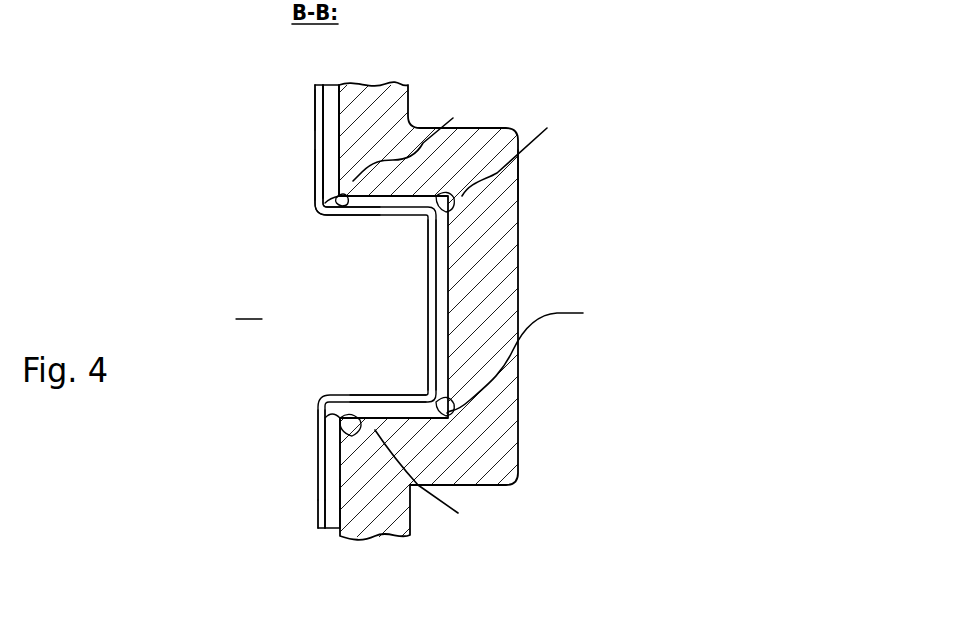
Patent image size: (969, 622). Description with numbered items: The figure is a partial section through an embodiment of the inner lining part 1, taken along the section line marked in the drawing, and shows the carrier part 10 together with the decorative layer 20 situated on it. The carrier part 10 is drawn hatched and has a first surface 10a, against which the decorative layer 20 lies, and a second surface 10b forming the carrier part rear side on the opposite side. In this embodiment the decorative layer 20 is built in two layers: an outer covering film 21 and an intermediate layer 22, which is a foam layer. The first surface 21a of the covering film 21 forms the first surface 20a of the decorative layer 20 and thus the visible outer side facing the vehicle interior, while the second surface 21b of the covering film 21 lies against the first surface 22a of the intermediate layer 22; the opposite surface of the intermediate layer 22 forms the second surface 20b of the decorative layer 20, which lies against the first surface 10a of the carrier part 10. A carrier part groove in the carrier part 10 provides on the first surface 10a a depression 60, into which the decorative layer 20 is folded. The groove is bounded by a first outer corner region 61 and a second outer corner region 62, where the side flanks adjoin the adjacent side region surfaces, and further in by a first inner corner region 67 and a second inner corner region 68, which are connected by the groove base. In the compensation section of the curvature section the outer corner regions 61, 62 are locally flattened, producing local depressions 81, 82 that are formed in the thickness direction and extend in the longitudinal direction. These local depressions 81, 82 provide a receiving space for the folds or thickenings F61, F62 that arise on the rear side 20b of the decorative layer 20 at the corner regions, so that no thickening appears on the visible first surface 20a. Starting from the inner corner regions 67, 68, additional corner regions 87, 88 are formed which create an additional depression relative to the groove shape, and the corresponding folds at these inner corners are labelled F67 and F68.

The inner lining part 1 is at (611, 139).
The carrier part 10 is at (490, 140).
The first surface of the carrier part 10a is at (335, 121).
The second surface of the carrier part 10b is at (521, 167).
The decorative layer 20 is at (309, 82).
The first surface of the decorative layer 20a is at (312, 108).
The second surface of the decorative layer 20b is at (342, 138).
The covering film 21 is at (320, 178).
The first surface of the covering film 21a is at (319, 504).
The second surface of the covering film 21b is at (333, 530).
The intermediate layer 22 is at (329, 152).
The first surface of the intermediate layer 22a is at (326, 463).
The depression 60 is at (336, 306).
The first outer corner region 61 is at (318, 404).
The second outer corner region 62 is at (328, 208).
The first inner corner region 67 is at (433, 404).
The second inner corner region 68 is at (432, 241).
The local depression 81 is at (358, 420).
The local depression 82 is at (341, 192).
The corner region 87 is at (431, 398).
The corner region 88 is at (440, 208).
The fold or thickening F61 is at (438, 482).
The fold or thickening F62 is at (421, 137).
The force on web 67 F67 is at (540, 357).
The force on wall 68 F68 is at (521, 153).